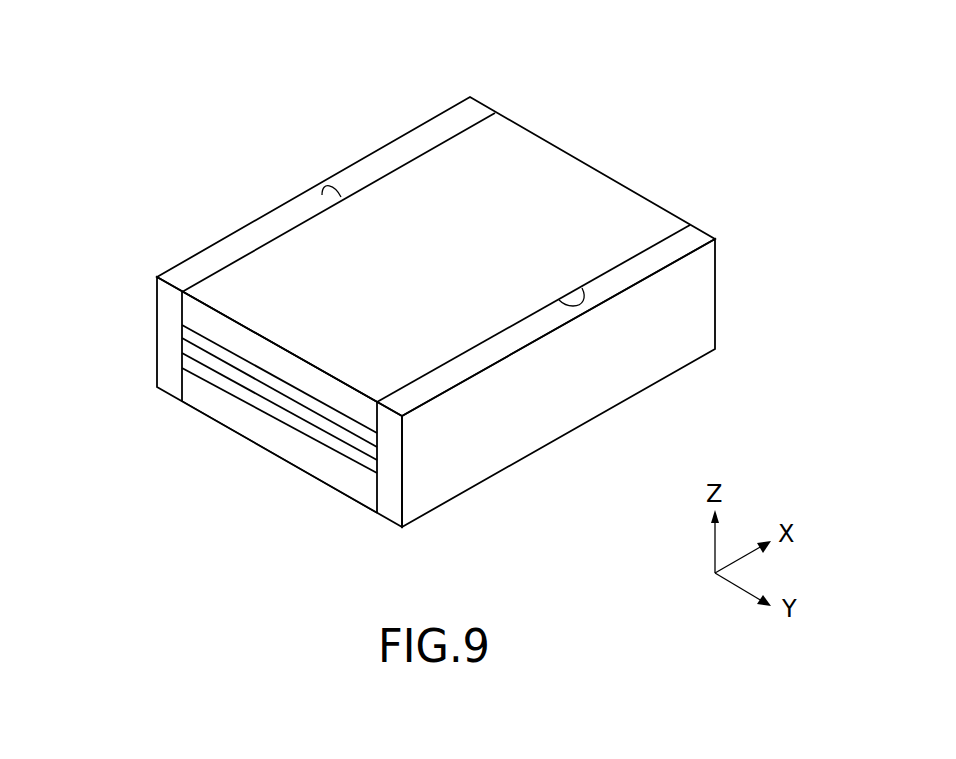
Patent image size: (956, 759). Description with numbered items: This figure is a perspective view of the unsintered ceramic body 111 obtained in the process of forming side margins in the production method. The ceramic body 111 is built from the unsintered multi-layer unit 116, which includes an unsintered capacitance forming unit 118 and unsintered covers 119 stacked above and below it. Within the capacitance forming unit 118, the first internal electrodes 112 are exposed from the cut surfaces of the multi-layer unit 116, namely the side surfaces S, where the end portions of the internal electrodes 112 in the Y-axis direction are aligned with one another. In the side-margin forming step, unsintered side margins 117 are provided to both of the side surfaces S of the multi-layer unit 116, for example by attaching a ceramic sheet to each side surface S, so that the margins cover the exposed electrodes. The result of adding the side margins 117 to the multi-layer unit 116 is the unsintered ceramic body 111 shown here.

The ceramic body 111 is at (411, 287).
The first internal electrode 112 is at (262, 373).
The multi-layer unit 116 is at (527, 150).
The side margin 117 is at (453, 117).
The capacitance forming unit 118 is at (163, 350).
The cover 119 is at (272, 365).
The side surface S is at (322, 195).